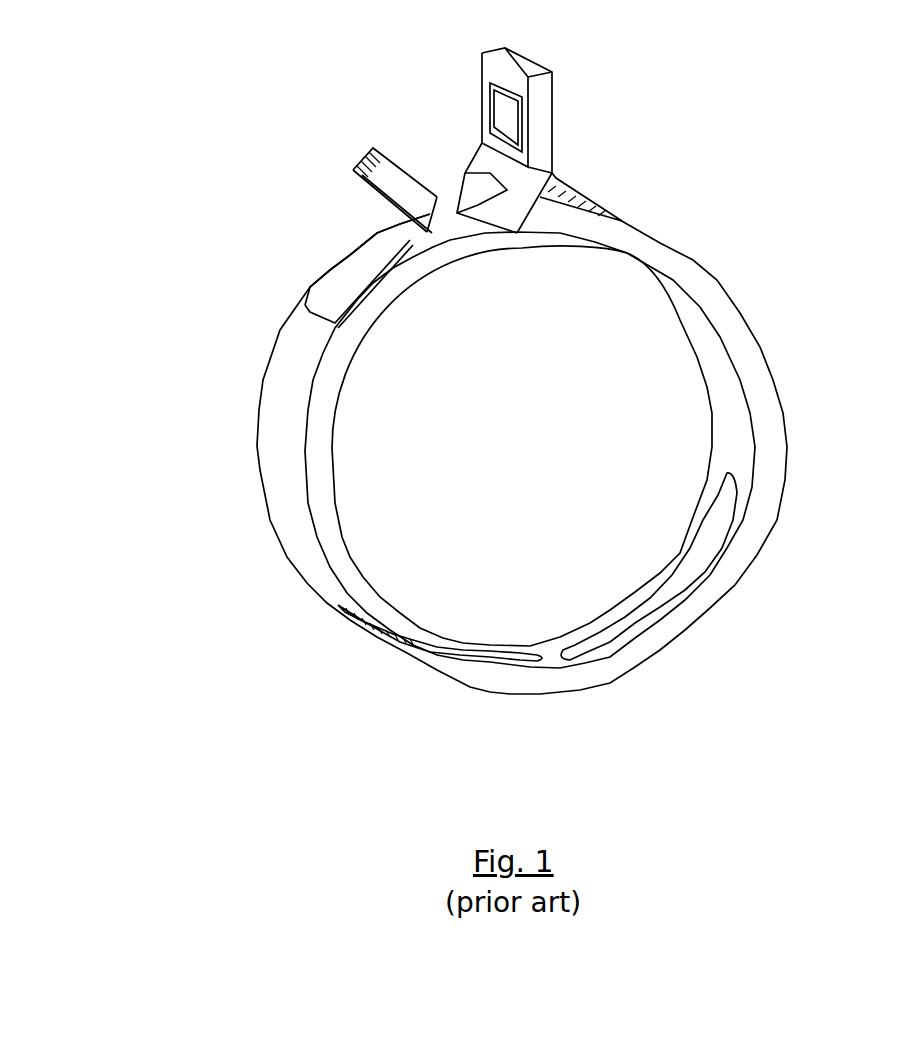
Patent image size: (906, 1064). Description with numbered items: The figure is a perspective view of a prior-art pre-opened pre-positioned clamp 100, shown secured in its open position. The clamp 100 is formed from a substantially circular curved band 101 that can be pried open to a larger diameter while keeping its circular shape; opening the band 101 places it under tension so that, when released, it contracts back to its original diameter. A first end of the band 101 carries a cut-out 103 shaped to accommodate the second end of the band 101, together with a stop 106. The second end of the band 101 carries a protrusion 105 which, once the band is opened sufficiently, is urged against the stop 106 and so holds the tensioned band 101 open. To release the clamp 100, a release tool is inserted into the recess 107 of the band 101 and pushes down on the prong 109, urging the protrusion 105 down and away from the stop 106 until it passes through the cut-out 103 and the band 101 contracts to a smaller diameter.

The POPP clamp 100 is at (182, 228).
The curved band 101 is at (295, 527).
The cut-out 103 is at (337, 257).
The protrusion 105 is at (557, 193).
The stop 106 is at (478, 158).
The recess 107 is at (498, 105).
The prong 109 is at (368, 163).